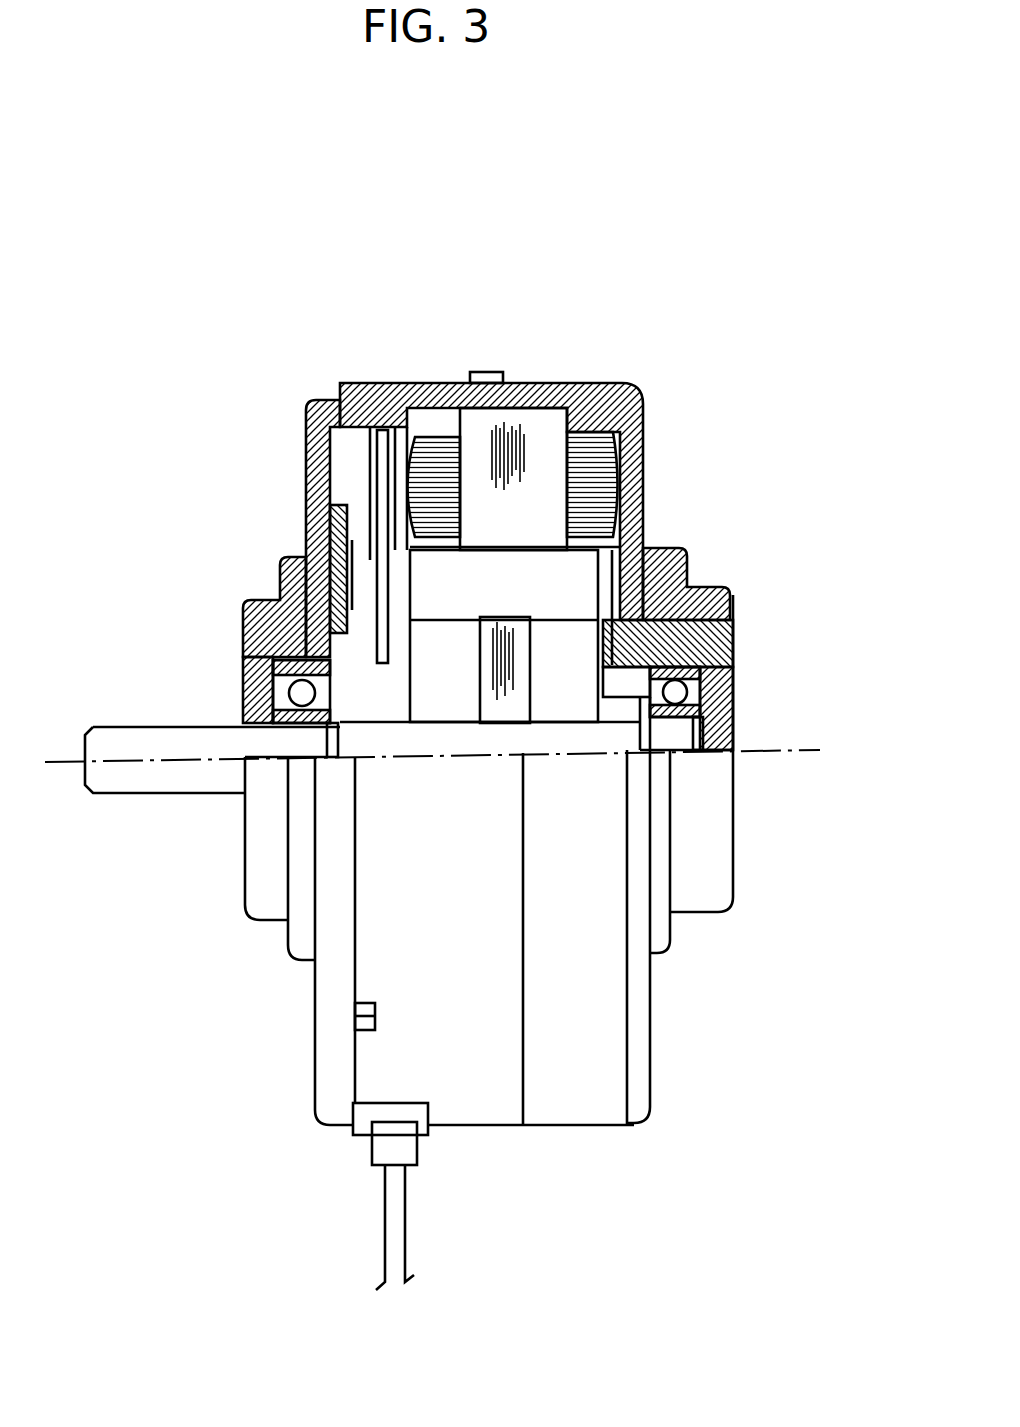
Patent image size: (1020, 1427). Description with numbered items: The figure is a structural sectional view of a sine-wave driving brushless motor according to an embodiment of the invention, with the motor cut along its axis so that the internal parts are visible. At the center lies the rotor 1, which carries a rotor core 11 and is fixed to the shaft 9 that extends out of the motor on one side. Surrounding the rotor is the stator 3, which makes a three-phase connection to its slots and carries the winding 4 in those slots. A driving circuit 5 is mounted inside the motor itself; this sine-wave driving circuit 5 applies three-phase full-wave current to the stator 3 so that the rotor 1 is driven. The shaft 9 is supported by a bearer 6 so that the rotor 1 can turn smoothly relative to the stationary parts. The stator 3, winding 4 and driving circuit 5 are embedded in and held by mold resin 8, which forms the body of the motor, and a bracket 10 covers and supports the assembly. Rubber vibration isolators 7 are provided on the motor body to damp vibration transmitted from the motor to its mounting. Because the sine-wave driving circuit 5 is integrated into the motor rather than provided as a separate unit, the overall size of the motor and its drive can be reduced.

The rotor 1 is at (520, 582).
The stator 3 is at (521, 435).
The winding 4 is at (443, 518).
The driving circuit 5 is at (370, 547).
The bearer 6 is at (640, 717).
The rubber vibration isolators 7 is at (300, 882).
The mold resin 8 is at (572, 1087).
The shaft 9 is at (147, 740).
The bracket 10 is at (305, 410).
The rotor core 11 is at (513, 637).